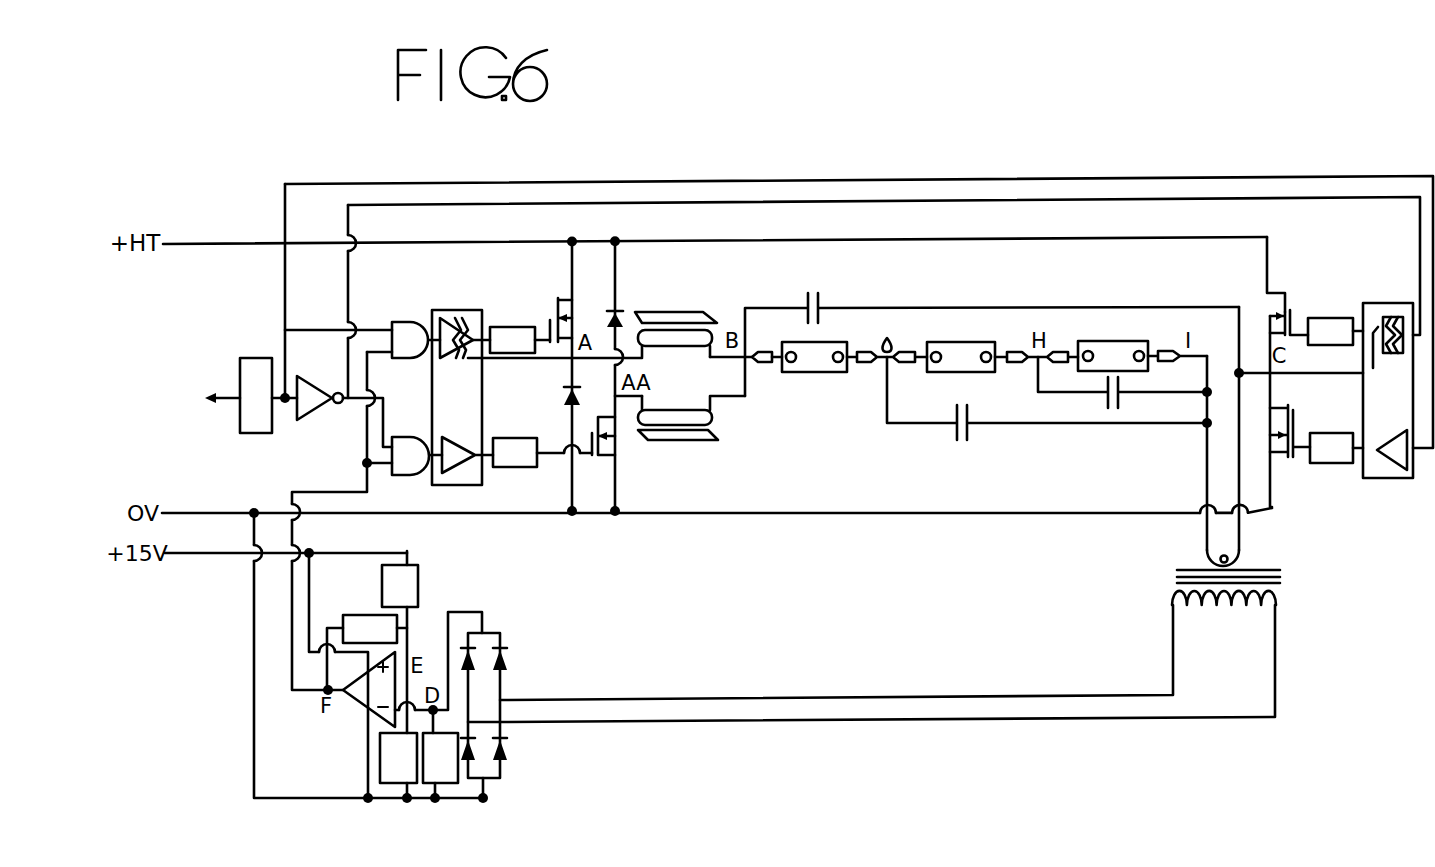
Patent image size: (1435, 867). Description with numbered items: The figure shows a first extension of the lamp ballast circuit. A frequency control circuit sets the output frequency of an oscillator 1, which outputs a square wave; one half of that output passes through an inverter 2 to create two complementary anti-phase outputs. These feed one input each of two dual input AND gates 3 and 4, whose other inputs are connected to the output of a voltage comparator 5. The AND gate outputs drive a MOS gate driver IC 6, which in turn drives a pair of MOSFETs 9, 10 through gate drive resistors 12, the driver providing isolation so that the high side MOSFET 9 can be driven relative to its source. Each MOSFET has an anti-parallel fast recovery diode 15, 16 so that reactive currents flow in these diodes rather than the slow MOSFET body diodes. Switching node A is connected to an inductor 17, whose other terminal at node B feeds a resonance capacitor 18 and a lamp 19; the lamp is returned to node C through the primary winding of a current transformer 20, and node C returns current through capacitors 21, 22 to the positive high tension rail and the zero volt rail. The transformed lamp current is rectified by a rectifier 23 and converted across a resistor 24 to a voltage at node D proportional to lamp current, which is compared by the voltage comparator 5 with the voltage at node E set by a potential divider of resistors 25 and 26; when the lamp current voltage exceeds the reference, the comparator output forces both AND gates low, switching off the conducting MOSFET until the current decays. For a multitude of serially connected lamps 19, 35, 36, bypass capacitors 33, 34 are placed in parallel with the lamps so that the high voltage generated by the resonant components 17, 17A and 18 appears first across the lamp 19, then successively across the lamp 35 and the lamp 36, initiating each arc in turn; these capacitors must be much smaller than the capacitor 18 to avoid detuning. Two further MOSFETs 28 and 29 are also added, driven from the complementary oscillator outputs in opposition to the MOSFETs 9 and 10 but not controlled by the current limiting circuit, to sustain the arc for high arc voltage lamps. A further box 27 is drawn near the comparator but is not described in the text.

The oscillator 1 is at (172, 396).
The inverter 2 is at (320, 398).
The dual input AND gate 3 is at (416, 340).
The dual input AND gate 4 is at (417, 456).
The voltage comparator 5 is at (369, 689).
The MOS gate driver IC 6 is at (462, 397).
The high side MOSFET 9 is at (552, 318).
The MOSFET 10 is at (592, 432).
The gate drive resistor 12 is at (541, 397).
The fast recovery diode 15 is at (601, 313).
The fast recovery diode 16 is at (558, 395).
The inductor 17 is at (690, 376).
The resonant LC component 17A is at (681, 394).
The capacitor 18 is at (992, 330).
The lamp 19 is at (814, 357).
The current transformer 20 is at (1262, 476).
The capacitor 21 is at (1331, 448).
The capacitor 22 is at (1383, 390).
The rectifier 23 is at (484, 715).
The resistor 24 is at (440, 765).
The resistor 25 is at (400, 642).
The resistor 26 is at (398, 765).
The resistor 27 is at (367, 652).
The MOSFET 28 is at (1295, 309).
The MOSFET 29 is at (1296, 428).
The bypass capacitor 33 is at (1047, 402).
The bypass capacitor 34 is at (1122, 386).
The lamp 35 is at (961, 357).
The lamp 36 is at (1113, 356).